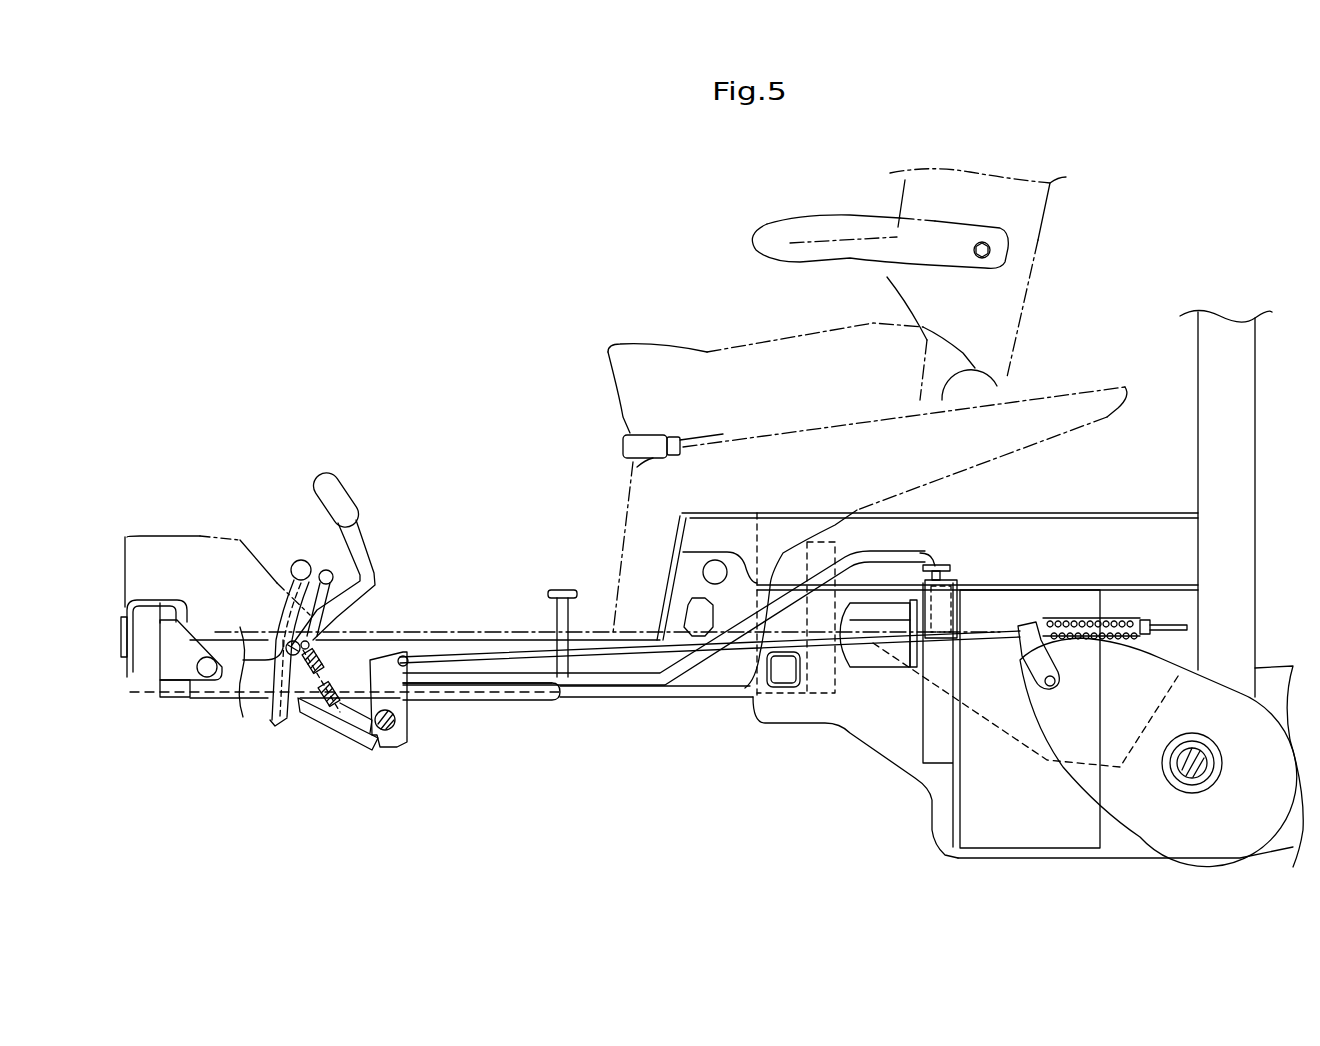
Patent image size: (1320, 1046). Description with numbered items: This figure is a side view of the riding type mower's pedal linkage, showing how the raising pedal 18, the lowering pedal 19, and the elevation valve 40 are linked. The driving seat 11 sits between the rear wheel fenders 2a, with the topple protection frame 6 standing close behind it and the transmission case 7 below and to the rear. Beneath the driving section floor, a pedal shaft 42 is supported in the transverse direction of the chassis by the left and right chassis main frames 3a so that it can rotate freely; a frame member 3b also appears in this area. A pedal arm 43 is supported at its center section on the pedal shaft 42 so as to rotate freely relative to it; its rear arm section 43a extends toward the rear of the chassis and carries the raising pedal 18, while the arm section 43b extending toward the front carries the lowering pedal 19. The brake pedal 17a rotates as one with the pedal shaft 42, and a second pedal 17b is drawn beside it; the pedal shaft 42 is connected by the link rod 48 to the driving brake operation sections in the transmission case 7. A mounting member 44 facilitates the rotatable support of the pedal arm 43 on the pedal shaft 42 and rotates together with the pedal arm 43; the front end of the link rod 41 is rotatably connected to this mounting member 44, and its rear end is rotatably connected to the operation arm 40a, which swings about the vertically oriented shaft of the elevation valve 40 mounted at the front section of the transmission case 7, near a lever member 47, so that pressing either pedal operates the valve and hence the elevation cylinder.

The rear wheel fender 2a is at (800, 420).
The chassis main frame 3a is at (457, 647).
The frame member 3b is at (780, 687).
The topple protection frame 6 is at (1205, 352).
The transmission case 7 is at (1022, 848).
The driving seat 11 is at (678, 348).
The brake pedal 17a is at (350, 502).
The pedal 17b is at (300, 563).
The raising pedal 18 is at (565, 588).
The lowering pedal 19 is at (323, 567).
The elevation valve 40 is at (947, 607).
The operation arm 40a is at (943, 567).
The link rod 41 is at (595, 682).
The pedal shaft 42 is at (403, 718).
The pedal arm 43 is at (529, 711).
The rear arm section 43a is at (490, 703).
The arm section 43b is at (350, 673).
The mounting member 44 is at (353, 713).
The lever arm 47 is at (1030, 653).
The link rod 48 is at (510, 650).